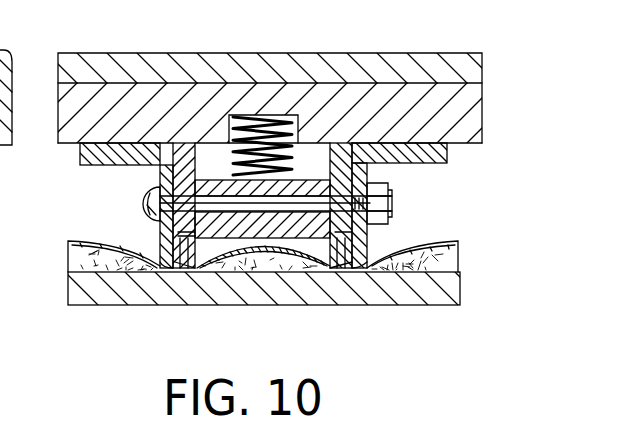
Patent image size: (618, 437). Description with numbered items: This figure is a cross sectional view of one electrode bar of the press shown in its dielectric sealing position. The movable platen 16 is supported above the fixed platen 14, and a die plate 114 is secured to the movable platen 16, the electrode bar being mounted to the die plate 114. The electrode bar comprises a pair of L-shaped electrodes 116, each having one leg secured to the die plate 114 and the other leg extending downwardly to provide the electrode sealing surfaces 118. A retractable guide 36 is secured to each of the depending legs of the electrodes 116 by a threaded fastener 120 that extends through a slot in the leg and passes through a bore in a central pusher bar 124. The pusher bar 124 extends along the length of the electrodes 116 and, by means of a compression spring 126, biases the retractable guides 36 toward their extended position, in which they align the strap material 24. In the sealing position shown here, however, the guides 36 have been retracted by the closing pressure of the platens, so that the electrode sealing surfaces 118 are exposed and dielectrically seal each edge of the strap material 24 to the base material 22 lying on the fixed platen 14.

The fixed platen 14 is at (82, 291).
The movable platen 16 is at (167, 58).
The base material 22 is at (82, 261).
The strap material 24 is at (258, 249).
The retractable guide 36 is at (160, 241).
The die plate 114 is at (72, 128).
The L-shaped electrode 116 is at (0, 189).
The electrode sealing surface 118 is at (178, 268).
The threaded fastener 120 is at (388, 202).
The central pusher bar 124 is at (310, 186).
The compression spring 126 is at (205, 150).